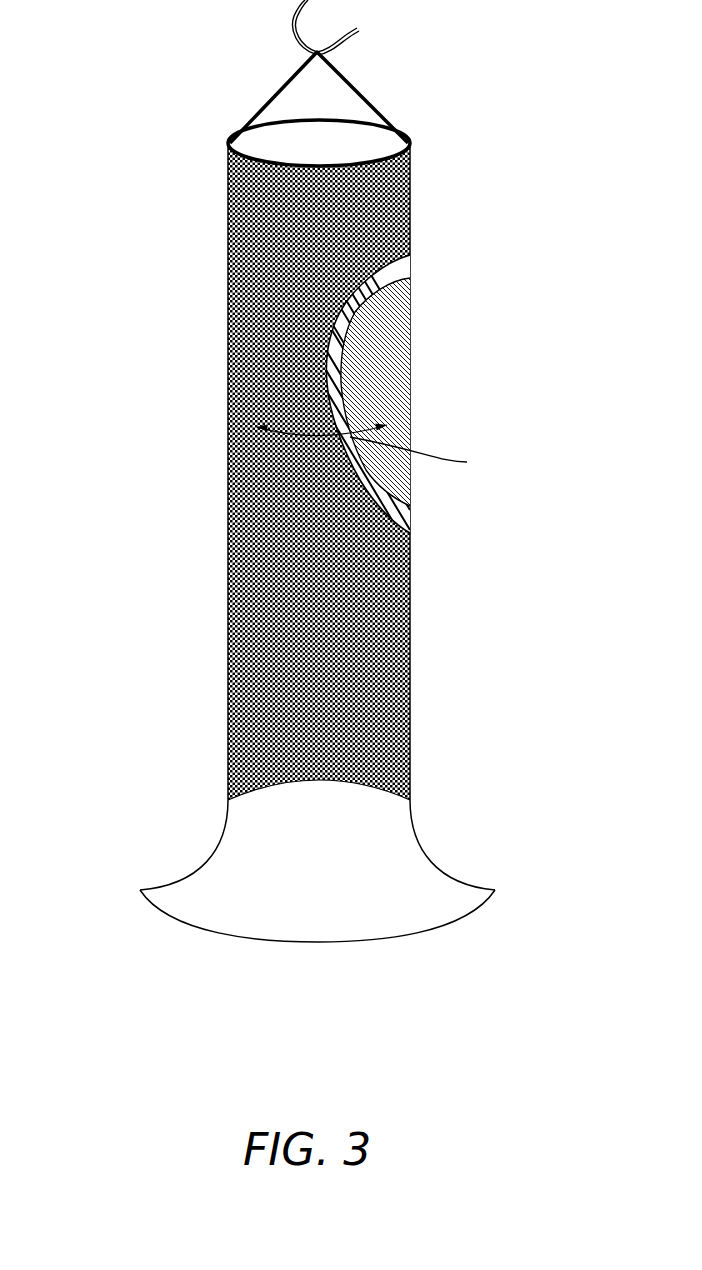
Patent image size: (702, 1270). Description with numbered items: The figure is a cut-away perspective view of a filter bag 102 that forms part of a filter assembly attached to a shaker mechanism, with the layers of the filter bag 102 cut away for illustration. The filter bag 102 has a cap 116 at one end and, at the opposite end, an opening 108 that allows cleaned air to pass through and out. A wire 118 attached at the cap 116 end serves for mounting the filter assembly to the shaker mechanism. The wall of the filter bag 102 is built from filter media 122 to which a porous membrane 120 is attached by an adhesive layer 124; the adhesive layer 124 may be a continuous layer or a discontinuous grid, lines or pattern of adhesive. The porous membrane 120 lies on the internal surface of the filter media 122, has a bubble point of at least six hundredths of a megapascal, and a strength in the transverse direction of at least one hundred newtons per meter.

The filter bag 102 is at (162, 465).
The opening 108 is at (317, 943).
The cap 116 is at (280, 120).
The wire 118 is at (380, 112).
The porous membrane 120 is at (410, 410).
The filter media 122 is at (400, 195).
The adhesive layer 124 is at (410, 253).